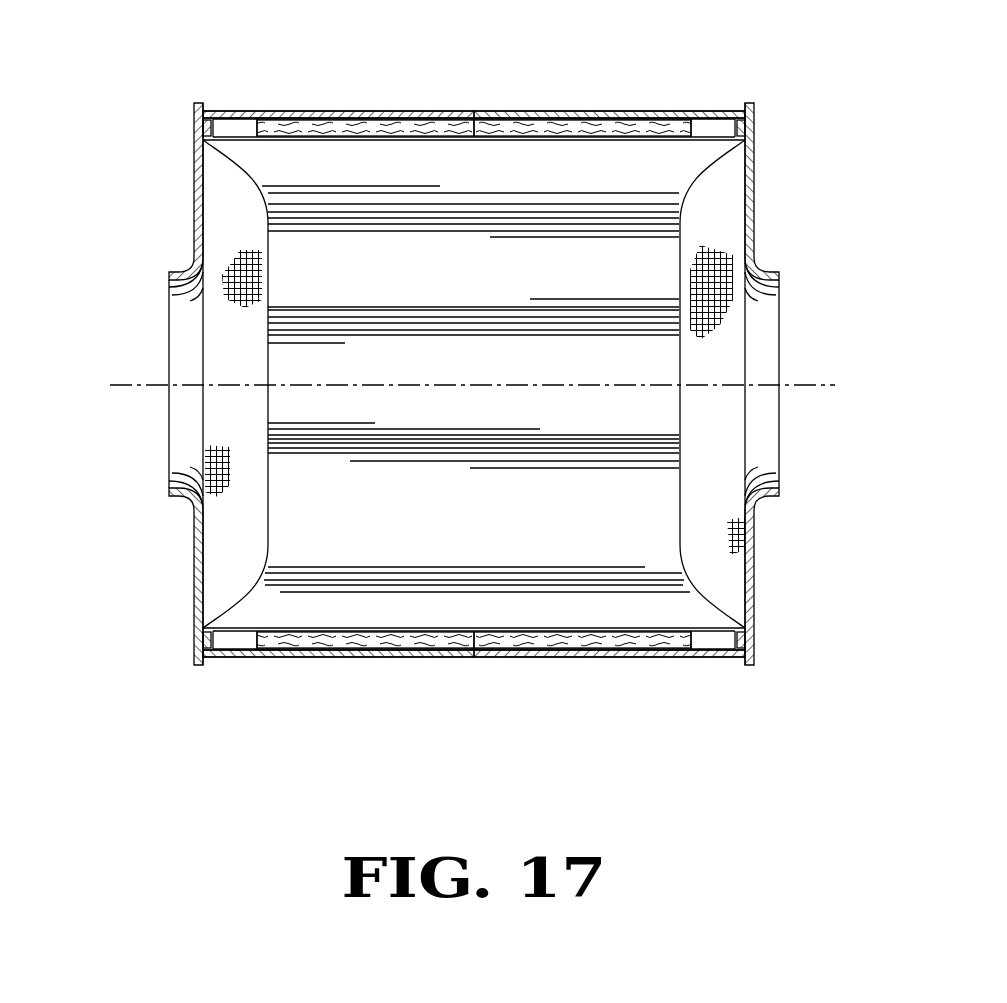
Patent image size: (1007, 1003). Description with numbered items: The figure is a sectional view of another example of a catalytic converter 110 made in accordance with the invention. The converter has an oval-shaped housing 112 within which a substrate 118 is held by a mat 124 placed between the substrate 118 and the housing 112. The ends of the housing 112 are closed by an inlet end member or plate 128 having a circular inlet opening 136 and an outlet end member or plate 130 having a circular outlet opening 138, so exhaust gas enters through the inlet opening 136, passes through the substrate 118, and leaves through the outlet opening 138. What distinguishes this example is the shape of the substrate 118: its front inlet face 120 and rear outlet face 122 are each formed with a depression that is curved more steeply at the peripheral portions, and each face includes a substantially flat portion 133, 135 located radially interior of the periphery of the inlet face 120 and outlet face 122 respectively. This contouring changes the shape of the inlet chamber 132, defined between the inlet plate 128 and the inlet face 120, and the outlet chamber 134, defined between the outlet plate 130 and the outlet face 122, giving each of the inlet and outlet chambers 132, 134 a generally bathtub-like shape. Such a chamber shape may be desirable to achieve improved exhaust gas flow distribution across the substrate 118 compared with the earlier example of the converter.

The catalytic converter 110 is at (653, 96).
The oval-shaped housing 112 is at (469, 106).
The substrate 118 is at (283, 138).
The inlet face 120 is at (261, 553).
The outlet face 122 is at (681, 517).
The mat 124 is at (520, 127).
The inlet end member or plate 128 is at (192, 204).
The outlet end member or plate 130 is at (758, 200).
The inlet chamber 132 is at (224, 410).
The substantially flat portion 133 is at (268, 367).
The outlet chamber 134 is at (725, 338).
The substantially flat portion 135 is at (679, 404).
The circular inlet opening 136 is at (178, 478).
The circular outlet opening 138 is at (768, 478).